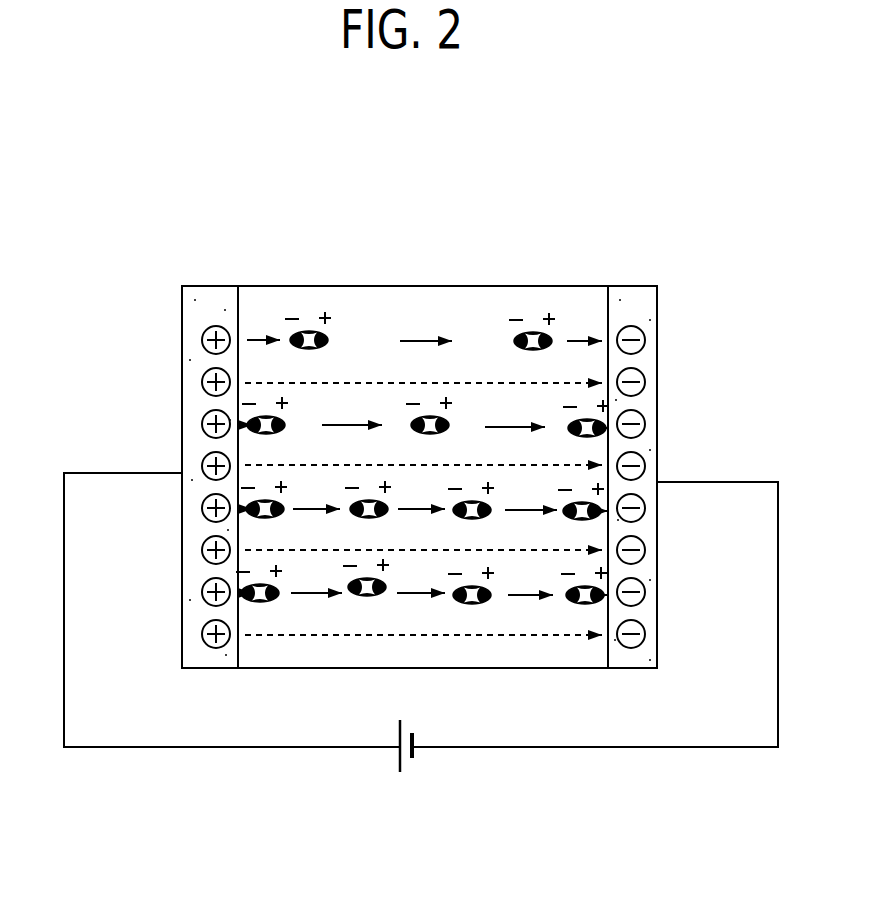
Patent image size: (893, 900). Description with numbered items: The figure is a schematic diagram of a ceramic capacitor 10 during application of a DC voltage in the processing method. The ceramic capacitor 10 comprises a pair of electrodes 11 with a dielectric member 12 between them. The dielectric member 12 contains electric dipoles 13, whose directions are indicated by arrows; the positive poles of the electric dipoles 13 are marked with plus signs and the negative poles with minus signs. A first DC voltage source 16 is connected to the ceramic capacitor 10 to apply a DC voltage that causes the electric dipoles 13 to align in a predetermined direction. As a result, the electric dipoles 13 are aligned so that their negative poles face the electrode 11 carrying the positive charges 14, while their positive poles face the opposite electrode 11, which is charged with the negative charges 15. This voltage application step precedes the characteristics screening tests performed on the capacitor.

The ceramic capacitor 10 is at (507, 243).
The electrodes 11 is at (207, 302).
The dielectric member 12 is at (340, 302).
The electric dipoles 13 is at (478, 602).
The positive charges 14 is at (217, 641).
The negative charges 15 is at (633, 655).
The first DC voltage source 16 is at (399, 762).